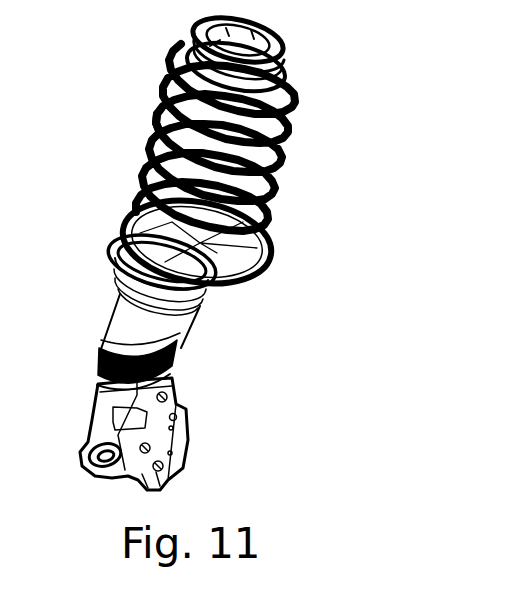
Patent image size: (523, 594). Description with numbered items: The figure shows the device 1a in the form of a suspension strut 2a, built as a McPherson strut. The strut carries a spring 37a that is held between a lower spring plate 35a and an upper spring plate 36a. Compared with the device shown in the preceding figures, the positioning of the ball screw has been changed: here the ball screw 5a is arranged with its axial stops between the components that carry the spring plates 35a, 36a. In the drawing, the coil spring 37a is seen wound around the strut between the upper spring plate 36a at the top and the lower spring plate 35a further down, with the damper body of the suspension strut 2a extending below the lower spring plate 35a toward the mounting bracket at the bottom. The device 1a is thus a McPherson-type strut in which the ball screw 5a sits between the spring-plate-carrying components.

The device 1a is at (412, 111).
The suspension strut 2a is at (306, 192).
The ball screw 5a is at (280, 143).
The lower spring plate 35a is at (262, 278).
The upper spring plate 36a is at (272, 74).
The spring 37a is at (163, 130).